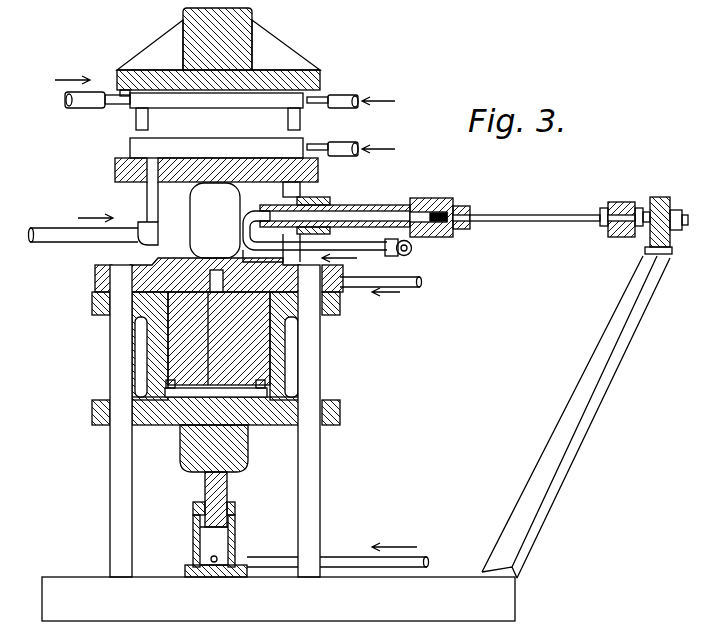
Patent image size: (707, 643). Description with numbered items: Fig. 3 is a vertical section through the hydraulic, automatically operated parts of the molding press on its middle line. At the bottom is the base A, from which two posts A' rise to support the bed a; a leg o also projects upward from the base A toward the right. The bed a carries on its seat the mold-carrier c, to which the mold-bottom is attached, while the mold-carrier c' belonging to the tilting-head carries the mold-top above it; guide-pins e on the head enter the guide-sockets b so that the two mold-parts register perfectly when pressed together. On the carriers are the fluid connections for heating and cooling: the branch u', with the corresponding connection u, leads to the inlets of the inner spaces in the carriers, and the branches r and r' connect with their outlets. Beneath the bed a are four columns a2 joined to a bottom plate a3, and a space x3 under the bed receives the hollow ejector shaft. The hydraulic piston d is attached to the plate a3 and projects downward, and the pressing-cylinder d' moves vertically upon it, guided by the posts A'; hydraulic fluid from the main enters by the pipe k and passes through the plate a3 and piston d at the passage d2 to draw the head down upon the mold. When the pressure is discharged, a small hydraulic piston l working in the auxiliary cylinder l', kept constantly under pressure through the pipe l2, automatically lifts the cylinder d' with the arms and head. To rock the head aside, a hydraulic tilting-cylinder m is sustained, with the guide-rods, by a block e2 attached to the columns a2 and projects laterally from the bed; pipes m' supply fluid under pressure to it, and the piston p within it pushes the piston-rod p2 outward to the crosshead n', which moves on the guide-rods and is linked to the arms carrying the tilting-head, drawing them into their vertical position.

The mold-carrier c' is at (212, 52).
The guide-sockets b is at (313, 142).
The inlet fitting u is at (83, 103).
The guide-pins e is at (136, 121).
The mold-carrier c is at (189, 146).
The branch r' is at (351, 87).
The branch r is at (351, 137).
The bed a is at (115, 167).
The columns a2 is at (190, 203).
The branch u' is at (93, 216).
The space x3 is at (215, 220).
The bottom plate a3 is at (95, 272).
The hydraulic piston d is at (216, 358).
The passage d2 is at (208, 342).
The pressing-cylinder d' is at (243, 357).
The small hydraulic piston l is at (192, 499).
The auxiliary cylinder l' is at (202, 539).
The pipe l2 is at (266, 562).
The posts A' is at (208, 421).
The base A is at (278, 584).
The leg o is at (597, 343).
The hydraulic tilting-cylinder m is at (335, 204).
The block e2 is at (307, 203).
The pipes m' is at (327, 222).
The piston p is at (437, 232).
The piston rod p2 is at (545, 215).
The crosshead n' is at (644, 211).
The pipe k is at (406, 290).